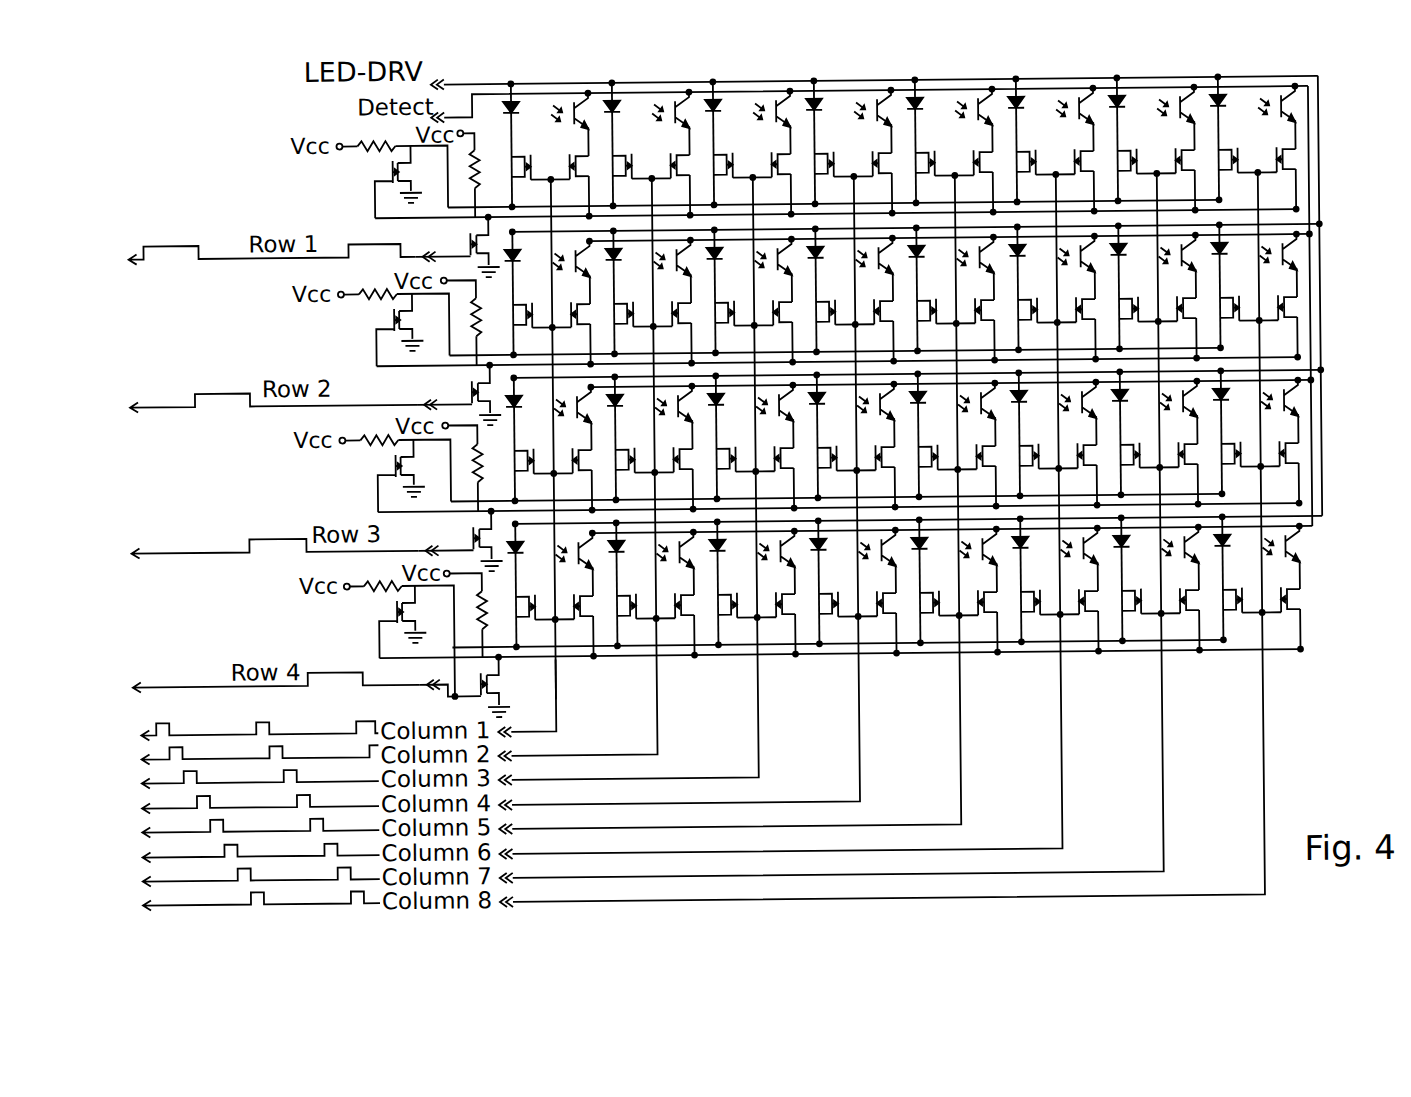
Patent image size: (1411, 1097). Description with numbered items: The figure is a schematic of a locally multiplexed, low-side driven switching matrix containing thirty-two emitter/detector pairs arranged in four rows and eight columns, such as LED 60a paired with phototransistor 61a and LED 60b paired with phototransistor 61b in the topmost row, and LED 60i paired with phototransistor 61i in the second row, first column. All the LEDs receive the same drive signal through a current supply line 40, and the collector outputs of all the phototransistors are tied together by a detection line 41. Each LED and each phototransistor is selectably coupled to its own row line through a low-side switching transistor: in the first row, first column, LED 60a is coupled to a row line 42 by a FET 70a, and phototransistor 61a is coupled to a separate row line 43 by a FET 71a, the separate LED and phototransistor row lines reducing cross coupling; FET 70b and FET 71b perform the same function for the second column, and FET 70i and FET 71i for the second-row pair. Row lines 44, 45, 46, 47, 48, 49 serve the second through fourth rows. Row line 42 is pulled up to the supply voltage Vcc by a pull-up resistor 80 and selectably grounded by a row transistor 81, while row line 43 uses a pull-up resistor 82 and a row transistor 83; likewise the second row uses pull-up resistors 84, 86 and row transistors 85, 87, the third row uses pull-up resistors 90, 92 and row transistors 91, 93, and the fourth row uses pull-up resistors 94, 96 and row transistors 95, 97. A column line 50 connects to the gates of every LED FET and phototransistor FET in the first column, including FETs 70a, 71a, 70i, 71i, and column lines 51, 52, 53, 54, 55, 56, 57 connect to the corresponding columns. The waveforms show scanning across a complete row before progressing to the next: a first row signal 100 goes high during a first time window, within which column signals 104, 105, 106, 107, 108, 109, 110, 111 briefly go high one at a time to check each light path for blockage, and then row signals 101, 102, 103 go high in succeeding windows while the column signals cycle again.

The current supply line 40 is at (473, 83).
The detection line 41 is at (452, 117).
The row line 42 is at (474, 207).
The row line 43 is at (540, 220).
The row line 44 is at (474, 355).
The row line 45 is at (537, 367).
The row line 46 is at (497, 499).
The row line 47 is at (537, 512).
The row line 48 is at (497, 650).
The row line 49 is at (550, 660).
The column line 50 is at (556, 708).
The column line 51 is at (656, 730).
The column line 52 is at (757, 731).
The column line 53 is at (858, 727).
The column line 54 is at (959, 743).
The column line 55 is at (1060, 738).
The column line 56 is at (1161, 740).
The column line 57 is at (1262, 741).
The LED 60a is at (530, 70).
The LED 60b is at (617, 84).
The LED 60i is at (513, 252).
The phototransistor 61a is at (591, 97).
The phototransistor 61b is at (679, 108).
The phototransistor 61i is at (578, 256).
The field-effect transistor 70a is at (527, 157).
The field-effect transistor 70b is at (628, 157).
The field-effect transistor 70i is at (518, 310).
The field-effect transistor 71a is at (571, 165).
The field-effect transistor 71b is at (672, 165).
The field-effect transistor 71i is at (585, 312).
The pull-up resistor 80 is at (362, 150).
The row transistor 81 is at (393, 178).
The pull-up resistor 82 is at (481, 152).
The row transistor 83 is at (478, 262).
The pull-up resistor 84 is at (362, 297).
The row transistor 85 is at (393, 326).
The pull-up resistor 86 is at (481, 300).
The row transistor 87 is at (470, 403).
The pull-up resistor 90 is at (362, 443).
The row transistor 91 is at (393, 472).
The pull-up resistor 92 is at (481, 446).
The row transistor 93 is at (470, 550).
The pull-up resistor 94 is at (365, 587).
The row transistor 95 is at (393, 618).
The pull-up resistor 96 is at (484, 593).
The row transistor 97 is at (482, 698).
The first row signal 100 is at (197, 255).
The row signal 101 is at (210, 403).
The row signal 102 is at (182, 551).
The row signal 103 is at (165, 683).
The column signal 104 is at (175, 732).
The column signal 105 is at (175, 756).
The column signal 106 is at (175, 780).
The column signal 107 is at (175, 805).
The column signal 108 is at (175, 829).
The column signal 109 is at (175, 854).
The column signal 110 is at (175, 878).
The column signal 111 is at (175, 902).